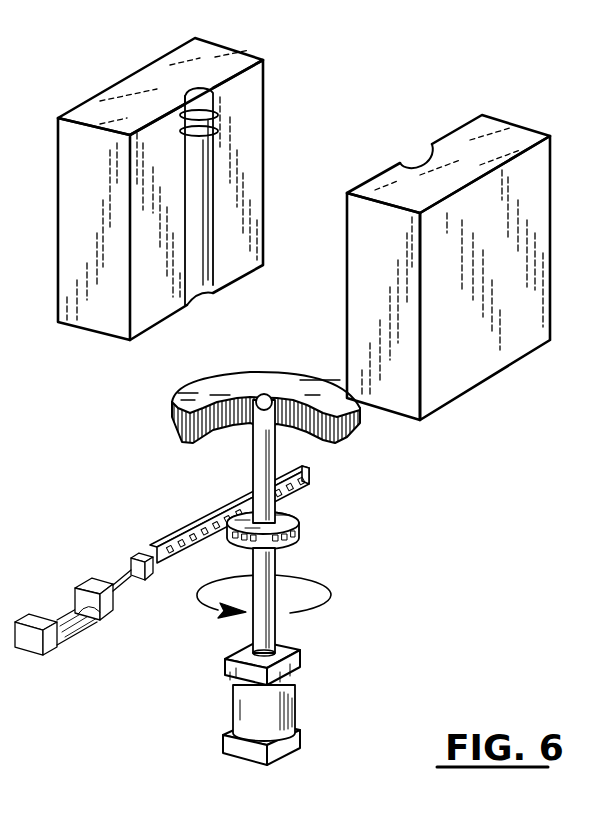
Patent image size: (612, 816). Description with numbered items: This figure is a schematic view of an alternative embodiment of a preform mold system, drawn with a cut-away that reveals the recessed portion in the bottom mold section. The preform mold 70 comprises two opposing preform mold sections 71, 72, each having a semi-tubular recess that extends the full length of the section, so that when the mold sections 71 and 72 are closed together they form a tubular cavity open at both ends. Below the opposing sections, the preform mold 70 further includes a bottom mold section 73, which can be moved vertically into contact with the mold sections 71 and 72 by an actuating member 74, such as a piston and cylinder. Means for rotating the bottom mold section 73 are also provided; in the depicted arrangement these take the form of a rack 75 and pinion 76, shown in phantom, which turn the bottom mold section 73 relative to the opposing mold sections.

The preform mold 70 is at (503, 50).
The preform mold section 71 is at (150, 83).
The preform mold section 72 is at (485, 230).
The bottom mold section 73 is at (218, 388).
The actuating member 74 is at (282, 697).
The rack 75 is at (311, 477).
The pinion 76 is at (300, 535).